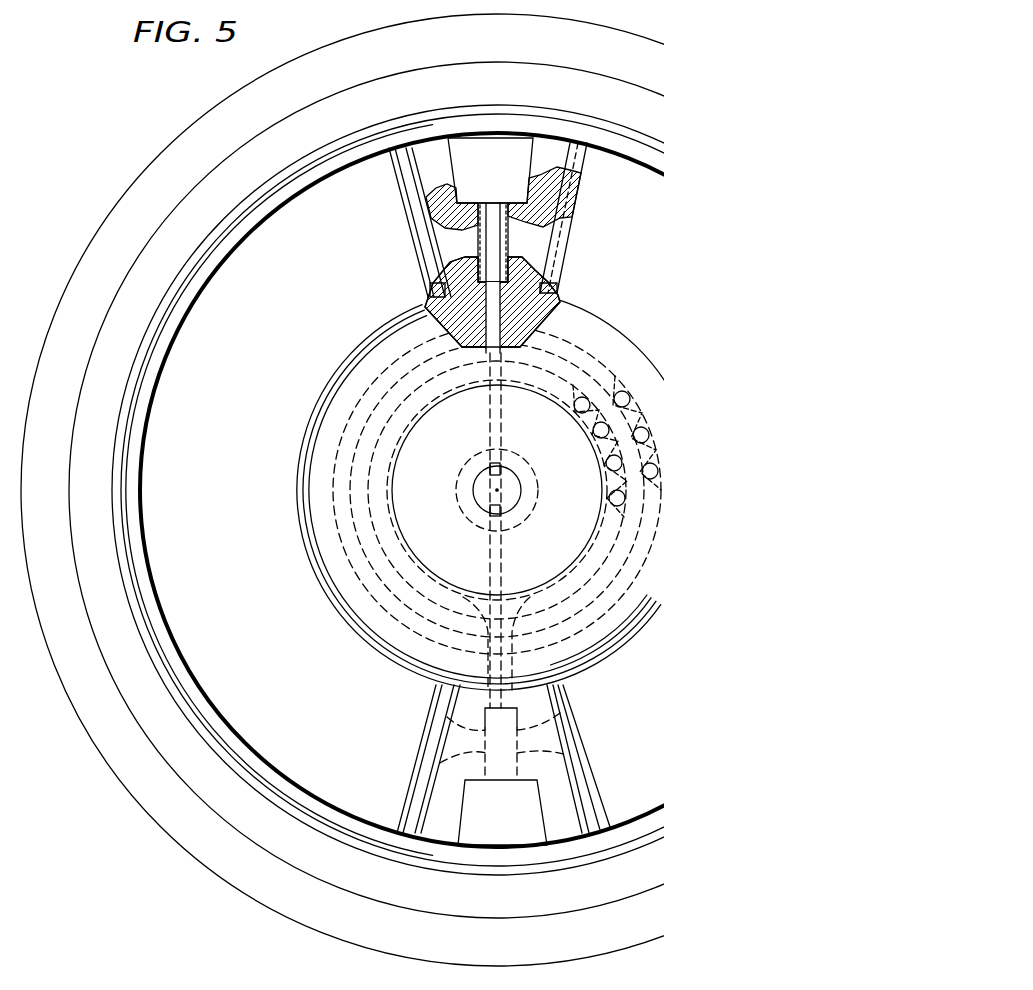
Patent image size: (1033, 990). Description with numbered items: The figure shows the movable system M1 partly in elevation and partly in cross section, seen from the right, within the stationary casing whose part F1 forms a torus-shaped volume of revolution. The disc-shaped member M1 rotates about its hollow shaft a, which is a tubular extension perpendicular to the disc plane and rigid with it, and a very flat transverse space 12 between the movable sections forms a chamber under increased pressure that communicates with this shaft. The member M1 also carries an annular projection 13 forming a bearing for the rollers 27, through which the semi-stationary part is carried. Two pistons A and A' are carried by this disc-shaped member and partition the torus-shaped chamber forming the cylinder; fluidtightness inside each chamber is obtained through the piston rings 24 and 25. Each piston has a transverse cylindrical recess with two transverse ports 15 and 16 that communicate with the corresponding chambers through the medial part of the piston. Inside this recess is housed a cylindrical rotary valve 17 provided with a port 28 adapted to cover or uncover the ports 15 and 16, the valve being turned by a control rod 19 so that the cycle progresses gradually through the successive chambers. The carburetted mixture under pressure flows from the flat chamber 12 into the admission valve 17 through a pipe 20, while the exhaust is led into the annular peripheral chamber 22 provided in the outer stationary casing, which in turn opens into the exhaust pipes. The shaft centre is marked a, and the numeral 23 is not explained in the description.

The flat transverse space 12 is at (445, 553).
The annular projection 13 is at (610, 447).
The transverse port 15 is at (447, 258).
The transverse port 16 is at (543, 227).
The cylindrical rotary valve 17 is at (473, 243).
The control rod 19 is at (540, 277).
The pipe 20 is at (500, 297).
The annular peripheral chamber 22 is at (375, 882).
The shaft 23 is at (503, 470).
The piston ring 24 is at (494, 488).
The piston ring 25 is at (628, 630).
The rollers 27 is at (612, 503).
The port 28 is at (507, 240).
The piston A is at (395, 222).
The piston A' is at (416, 759).
The movable system section M1 is at (135, 408).
The stationary casing part F1 is at (257, 885).
The hollow shaft a is at (506, 492).